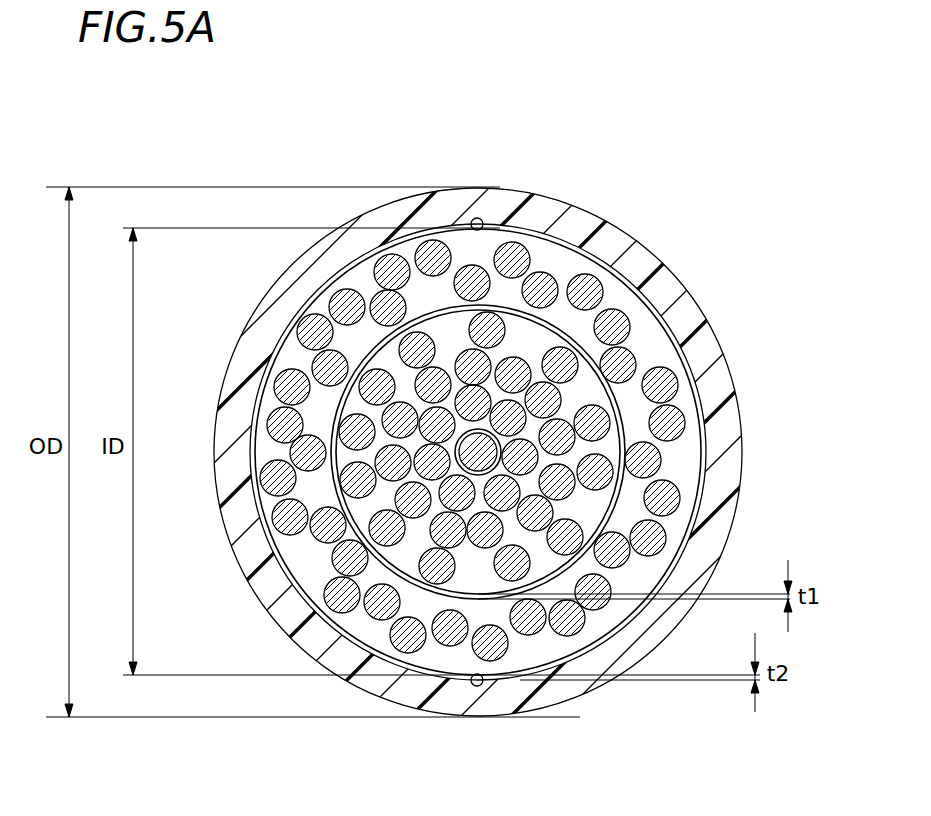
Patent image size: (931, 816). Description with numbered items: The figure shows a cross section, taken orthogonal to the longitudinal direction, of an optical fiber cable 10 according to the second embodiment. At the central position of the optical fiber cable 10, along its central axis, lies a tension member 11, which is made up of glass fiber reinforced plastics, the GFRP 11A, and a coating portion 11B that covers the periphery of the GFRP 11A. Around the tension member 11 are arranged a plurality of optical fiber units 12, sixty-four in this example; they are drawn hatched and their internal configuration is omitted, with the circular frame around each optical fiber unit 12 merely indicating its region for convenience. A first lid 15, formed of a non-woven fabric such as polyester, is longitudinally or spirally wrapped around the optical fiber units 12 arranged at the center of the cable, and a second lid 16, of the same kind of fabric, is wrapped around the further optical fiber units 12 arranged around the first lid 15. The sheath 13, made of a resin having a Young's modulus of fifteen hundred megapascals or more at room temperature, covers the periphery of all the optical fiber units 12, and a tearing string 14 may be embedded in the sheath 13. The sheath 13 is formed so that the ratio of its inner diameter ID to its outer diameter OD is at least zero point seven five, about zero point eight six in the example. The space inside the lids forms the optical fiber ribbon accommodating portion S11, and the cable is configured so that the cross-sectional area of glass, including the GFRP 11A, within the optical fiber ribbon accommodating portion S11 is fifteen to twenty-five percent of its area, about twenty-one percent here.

The optical fiber cable 10 is at (643, 207).
The tension member 11 is at (575, 448).
The glass fiber reinforced plastics (GFRP) 11A is at (490, 451).
The coating portion 11B is at (502, 469).
The optical fiber unit 12 is at (525, 243).
The sheath 13 is at (570, 217).
The tearing string 14 is at (472, 687).
The first lid 15 is at (617, 402).
The second lid 16 is at (658, 313).
The optical fiber ribbon accommodating portion S11 is at (652, 348).